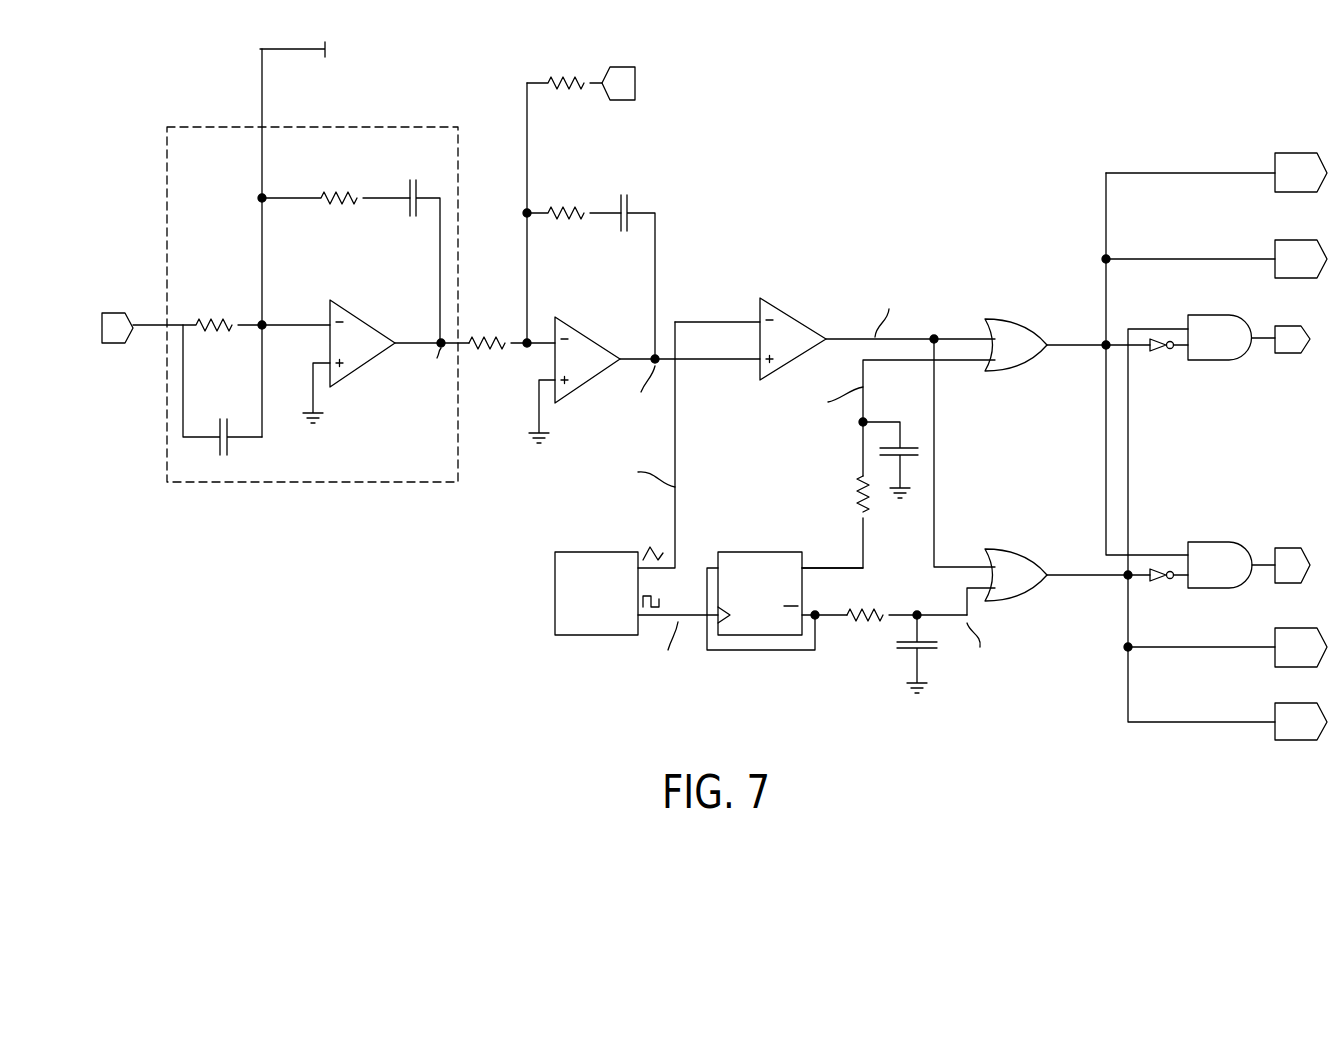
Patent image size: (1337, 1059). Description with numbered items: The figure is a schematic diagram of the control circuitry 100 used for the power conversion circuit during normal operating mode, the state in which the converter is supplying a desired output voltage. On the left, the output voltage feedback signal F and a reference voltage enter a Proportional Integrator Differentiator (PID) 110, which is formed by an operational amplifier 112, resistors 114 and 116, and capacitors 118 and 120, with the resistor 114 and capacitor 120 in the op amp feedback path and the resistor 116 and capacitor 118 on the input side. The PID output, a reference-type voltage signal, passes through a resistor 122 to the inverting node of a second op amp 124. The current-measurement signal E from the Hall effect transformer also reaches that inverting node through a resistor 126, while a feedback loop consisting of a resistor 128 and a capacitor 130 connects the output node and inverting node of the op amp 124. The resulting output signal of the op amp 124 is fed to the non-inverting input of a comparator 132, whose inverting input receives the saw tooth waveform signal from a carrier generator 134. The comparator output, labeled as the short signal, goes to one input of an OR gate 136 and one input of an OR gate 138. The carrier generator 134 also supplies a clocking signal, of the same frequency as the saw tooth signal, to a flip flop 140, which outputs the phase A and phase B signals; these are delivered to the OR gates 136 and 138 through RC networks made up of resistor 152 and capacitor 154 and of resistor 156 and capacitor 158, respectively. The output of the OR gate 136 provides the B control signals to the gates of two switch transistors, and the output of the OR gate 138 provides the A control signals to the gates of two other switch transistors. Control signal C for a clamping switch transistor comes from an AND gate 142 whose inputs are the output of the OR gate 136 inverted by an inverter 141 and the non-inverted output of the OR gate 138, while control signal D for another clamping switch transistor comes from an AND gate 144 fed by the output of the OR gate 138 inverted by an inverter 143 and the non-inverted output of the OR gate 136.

The control circuitry 100 is at (899, 123).
The Proportional Integrator Differentiator (PID) 110 is at (206, 162).
The operational amplifier 112 is at (373, 353).
The resistor 114 is at (345, 210).
The resistor 116 is at (215, 314).
The capacitor 118 is at (222, 412).
The capacitor 120 is at (415, 226).
The resistor 122 is at (493, 352).
The operational amplifier 124 is at (596, 369).
The resistor 126 is at (568, 75).
The resistor 128 is at (568, 205).
The capacitor 130 is at (625, 240).
The comparator 132 is at (798, 351).
The carrier generator 134 is at (613, 609).
The OR gate 136 is at (1028, 359).
The OR gate 138 is at (1028, 587).
The flip flop 140 is at (758, 550).
The inverter 141 is at (1158, 356).
The AND gate 142 is at (1231, 349).
The inverter 143 is at (1160, 586).
The AND gate 144 is at (1231, 577).
The RC network resistor 152 is at (860, 490).
The RC network capacitor 154 is at (908, 447).
The RC network resistor 156 is at (880, 605).
The RC network capacitor 158 is at (893, 647).